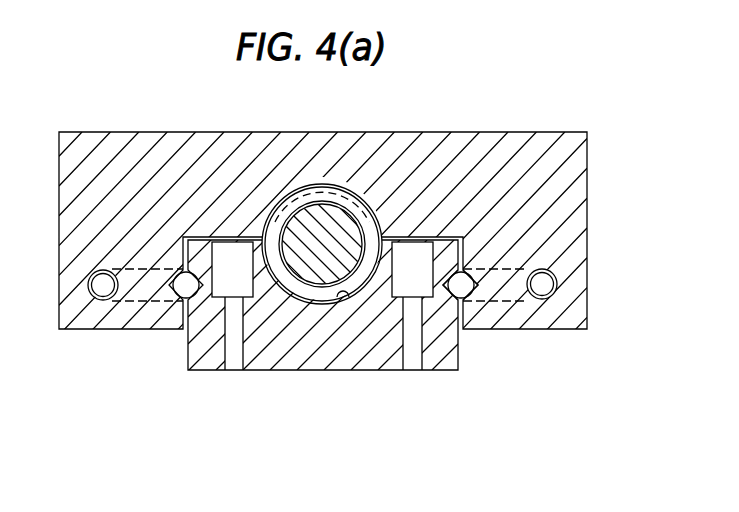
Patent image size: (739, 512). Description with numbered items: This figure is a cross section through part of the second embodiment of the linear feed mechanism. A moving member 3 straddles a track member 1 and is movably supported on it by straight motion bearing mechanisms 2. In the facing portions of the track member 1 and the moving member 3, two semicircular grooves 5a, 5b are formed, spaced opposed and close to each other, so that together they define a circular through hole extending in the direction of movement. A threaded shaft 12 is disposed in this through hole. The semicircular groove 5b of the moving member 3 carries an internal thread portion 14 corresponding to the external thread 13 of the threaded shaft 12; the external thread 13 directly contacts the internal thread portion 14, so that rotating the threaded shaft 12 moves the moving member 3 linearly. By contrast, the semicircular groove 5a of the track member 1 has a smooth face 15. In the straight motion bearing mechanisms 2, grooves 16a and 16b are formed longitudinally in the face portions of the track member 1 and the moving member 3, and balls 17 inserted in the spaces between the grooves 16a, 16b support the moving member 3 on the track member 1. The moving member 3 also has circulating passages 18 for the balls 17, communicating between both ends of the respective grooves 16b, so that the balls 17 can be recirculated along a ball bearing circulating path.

The track member 1 is at (303, 348).
The straight motion bearing mechanism 2 is at (147, 312).
The moving member 3 is at (483, 147).
The semicircular groove 5a is at (315, 303).
The semicircular groove 5b is at (358, 197).
The threaded shaft 12 is at (332, 225).
The external thread 13 is at (292, 287).
The internal thread portion 14 is at (375, 213).
The smooth face 15 is at (345, 297).
The groove 16a is at (453, 297).
The groove 16b is at (465, 264).
The ball 17 is at (462, 289).
The circulating passage 18 is at (560, 279).